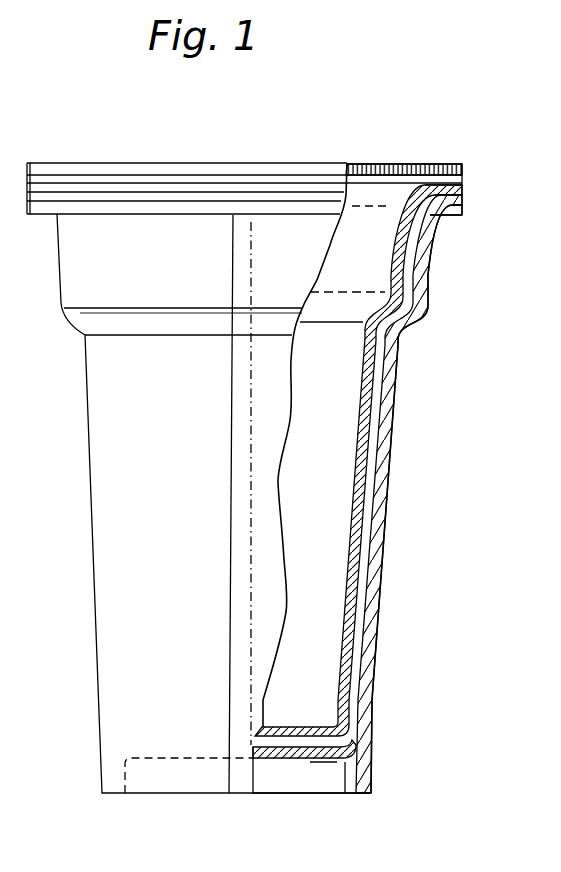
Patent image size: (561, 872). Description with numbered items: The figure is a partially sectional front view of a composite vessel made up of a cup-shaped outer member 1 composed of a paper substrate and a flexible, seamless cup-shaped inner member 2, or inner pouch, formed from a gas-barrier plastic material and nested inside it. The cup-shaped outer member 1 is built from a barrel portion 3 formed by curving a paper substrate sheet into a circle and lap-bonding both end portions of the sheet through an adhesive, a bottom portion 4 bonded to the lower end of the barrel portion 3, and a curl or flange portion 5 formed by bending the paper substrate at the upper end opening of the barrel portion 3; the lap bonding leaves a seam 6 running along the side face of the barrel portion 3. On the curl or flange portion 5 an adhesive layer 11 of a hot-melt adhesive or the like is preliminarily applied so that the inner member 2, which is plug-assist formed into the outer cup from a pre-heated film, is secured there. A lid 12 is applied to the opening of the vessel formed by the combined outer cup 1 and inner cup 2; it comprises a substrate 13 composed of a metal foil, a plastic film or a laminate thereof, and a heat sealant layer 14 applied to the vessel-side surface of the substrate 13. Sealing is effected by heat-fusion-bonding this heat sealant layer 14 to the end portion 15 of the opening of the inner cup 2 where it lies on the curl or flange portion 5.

The cup-shaped outer member 1 is at (389, 497).
The inner member 2 is at (353, 493).
The barrel portion 3 is at (380, 588).
The bottom portion 4 is at (293, 760).
The curl or flange portion 5 is at (450, 216).
The seam 6 is at (231, 572).
The adhesive layer 11 is at (462, 197).
The lid 12 is at (378, 163).
The substrate 13 is at (415, 163).
The heat sealant layer 14 is at (373, 184).
The end portion 15 is at (462, 188).